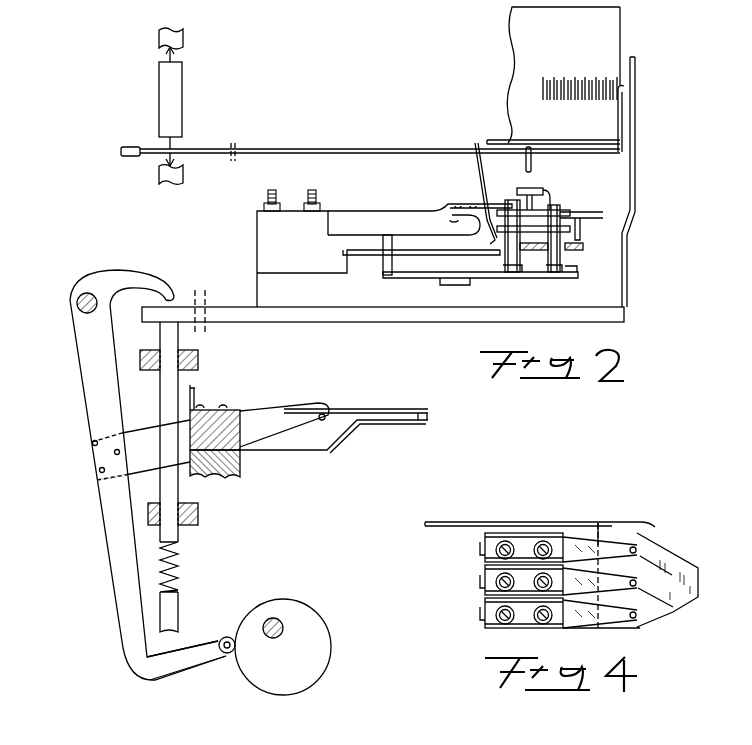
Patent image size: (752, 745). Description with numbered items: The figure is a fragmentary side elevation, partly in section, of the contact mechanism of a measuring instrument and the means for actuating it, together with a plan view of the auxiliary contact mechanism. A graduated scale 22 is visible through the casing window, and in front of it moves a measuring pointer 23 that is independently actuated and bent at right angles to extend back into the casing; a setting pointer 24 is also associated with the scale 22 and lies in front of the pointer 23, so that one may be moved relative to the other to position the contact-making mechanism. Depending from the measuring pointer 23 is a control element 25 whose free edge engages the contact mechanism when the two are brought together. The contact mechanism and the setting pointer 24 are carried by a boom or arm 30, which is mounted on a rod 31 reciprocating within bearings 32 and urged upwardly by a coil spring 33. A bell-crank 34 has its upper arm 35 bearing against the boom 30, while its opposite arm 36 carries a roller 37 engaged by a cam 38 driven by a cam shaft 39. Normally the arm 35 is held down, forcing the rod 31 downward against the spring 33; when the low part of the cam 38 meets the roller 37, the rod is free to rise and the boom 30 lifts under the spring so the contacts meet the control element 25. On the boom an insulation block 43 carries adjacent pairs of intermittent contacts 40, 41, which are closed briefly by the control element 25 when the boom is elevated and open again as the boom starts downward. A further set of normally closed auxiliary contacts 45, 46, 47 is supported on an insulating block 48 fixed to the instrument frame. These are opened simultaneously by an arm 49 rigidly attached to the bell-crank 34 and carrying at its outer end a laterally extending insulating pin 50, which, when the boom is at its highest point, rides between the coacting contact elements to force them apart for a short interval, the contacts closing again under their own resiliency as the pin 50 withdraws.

In FIG. 2, the graduated scale 22 is at (543, 88).
In FIG. 2, the measuring pointer 23 is at (618, 108).
In FIG. 2, the setting pointer 24 is at (635, 125).
In FIG. 2, the control element 25 is at (531, 160).
In FIG. 2, the boom or arm 30 is at (624, 316).
In FIG. 2, the rod 31 is at (170, 386).
In FIG. 2, the bearings 32 is at (199, 358).
In FIG. 2, the coil spring 33 is at (180, 561).
In FIG. 2, the bell-crank 34 is at (78, 318).
In FIG. 2, the upper arm 35 is at (150, 282).
In FIG. 2, the opposite arm 36 is at (190, 665).
In FIG. 2, the roller 37 is at (230, 627).
In FIG. 2, the cam 38 is at (318, 617).
In FIG. 2, the cam shaft 39 is at (274, 618).
In FIG. 2, the intermittent contact 40 is at (522, 190).
In FIG. 2, the intermittent contact 41 is at (442, 211).
In FIG. 2, the insulation block 43 is at (266, 222).
In FIG. 2, the auxiliary contact 45 is at (400, 400).
In FIG. 4, the auxiliary contact 45 is at (648, 618).
In FIG. 4, the auxiliary contact 46 is at (680, 602).
In FIG. 4, the auxiliary contact 47 is at (640, 548).
In FIG. 2, the insulating block 48 is at (240, 468).
In FIG. 4, the insulating block 48 is at (487, 566).
In FIG. 2, the arm 49 is at (277, 424).
In FIG. 4, the arm 49 is at (545, 513).
In FIG. 2, the insulating pin 50 is at (326, 420).
In FIG. 4, the insulating pin 50 is at (600, 526).